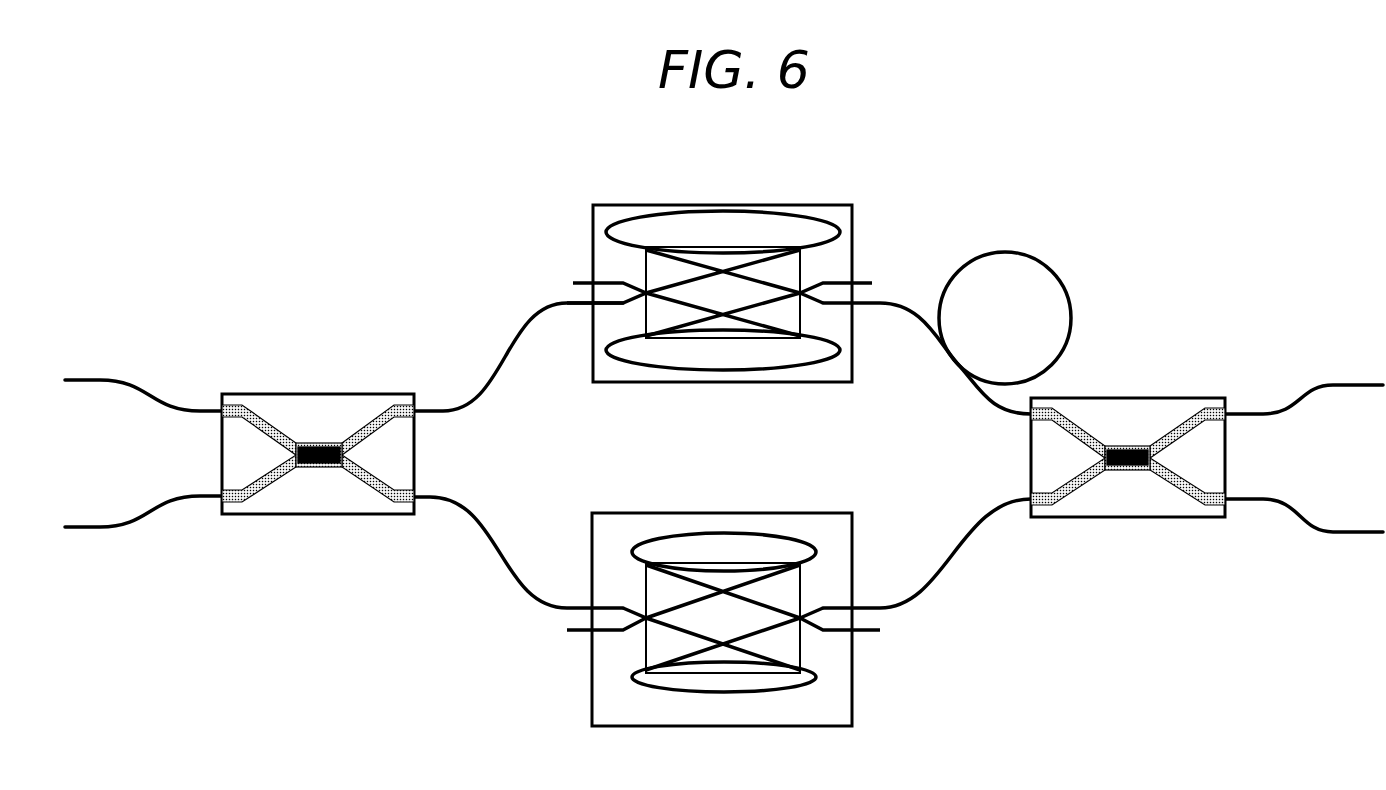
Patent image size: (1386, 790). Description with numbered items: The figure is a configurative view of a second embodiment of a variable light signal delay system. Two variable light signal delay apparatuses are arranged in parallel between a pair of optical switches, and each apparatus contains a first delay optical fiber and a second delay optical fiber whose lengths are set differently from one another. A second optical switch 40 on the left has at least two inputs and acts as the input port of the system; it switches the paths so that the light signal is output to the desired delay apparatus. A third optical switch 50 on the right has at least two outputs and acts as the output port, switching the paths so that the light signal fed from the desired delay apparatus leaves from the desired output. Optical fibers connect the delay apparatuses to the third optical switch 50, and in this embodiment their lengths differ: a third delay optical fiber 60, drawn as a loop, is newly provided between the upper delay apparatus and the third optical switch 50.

The second optical switch 40 is at (312, 514).
The third optical switch 50 is at (1133, 517).
The third delay optical fiber 60 is at (1070, 297).